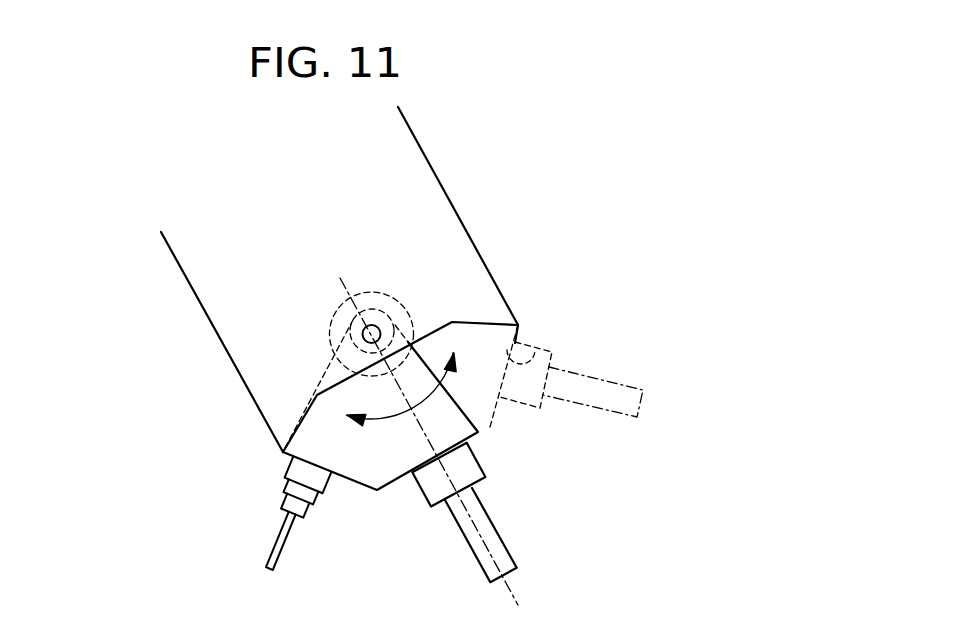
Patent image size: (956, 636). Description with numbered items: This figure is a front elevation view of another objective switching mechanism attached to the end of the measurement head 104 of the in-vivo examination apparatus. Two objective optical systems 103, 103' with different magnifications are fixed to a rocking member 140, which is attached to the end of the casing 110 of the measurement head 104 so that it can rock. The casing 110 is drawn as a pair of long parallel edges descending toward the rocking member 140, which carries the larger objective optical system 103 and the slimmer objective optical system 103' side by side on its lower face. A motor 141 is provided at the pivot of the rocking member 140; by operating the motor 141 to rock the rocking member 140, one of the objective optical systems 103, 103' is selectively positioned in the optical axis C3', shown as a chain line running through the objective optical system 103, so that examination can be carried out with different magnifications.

The measurement head 104 is at (312, 293).
The casing 110 is at (214, 334).
The rocking member 140 is at (377, 490).
The motor 141 is at (404, 300).
The objective optical system 103 is at (542, 446).
The objective optical system 103' is at (249, 513).
The optical axis C3' is at (476, 441).